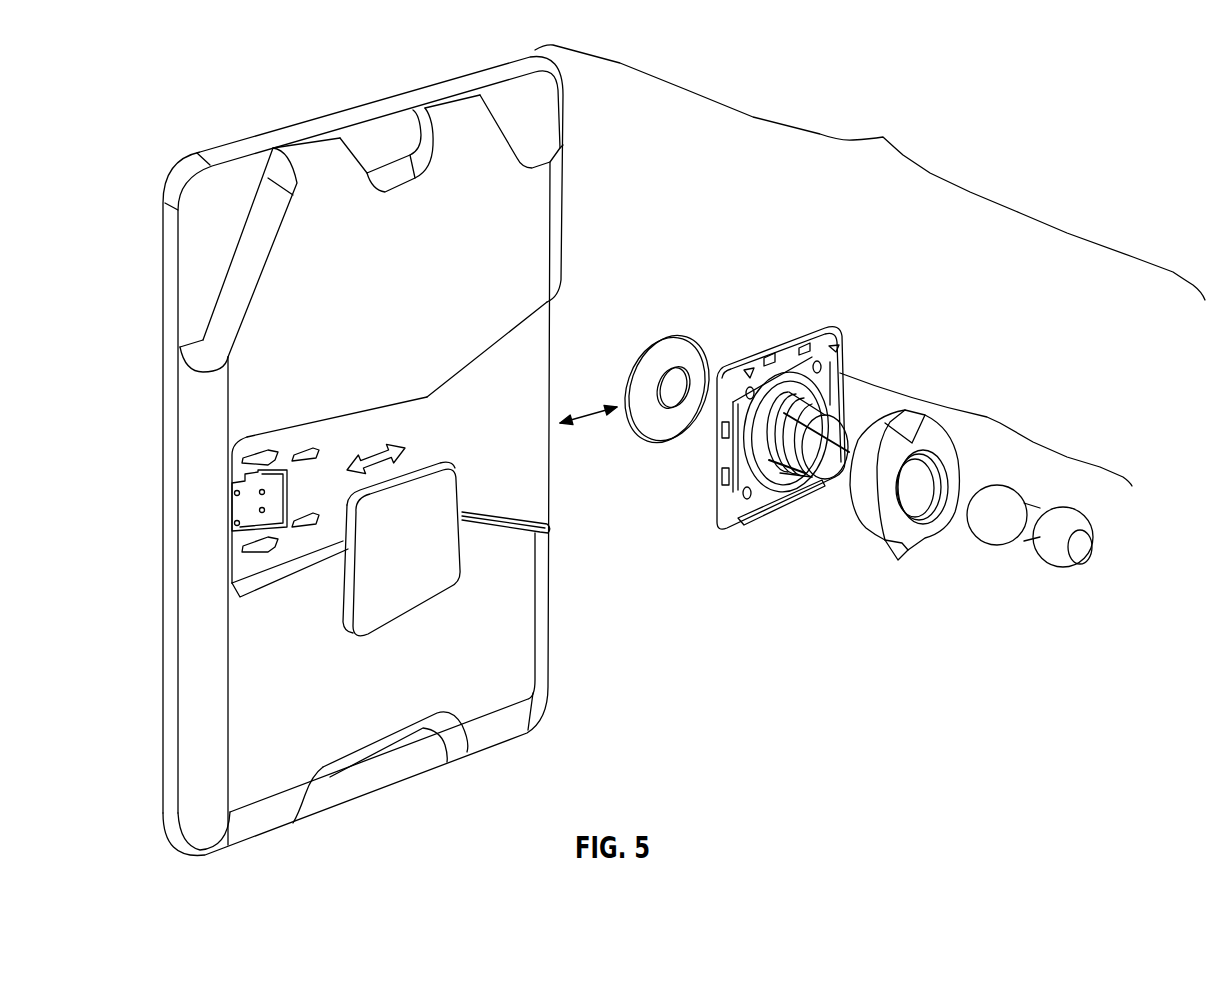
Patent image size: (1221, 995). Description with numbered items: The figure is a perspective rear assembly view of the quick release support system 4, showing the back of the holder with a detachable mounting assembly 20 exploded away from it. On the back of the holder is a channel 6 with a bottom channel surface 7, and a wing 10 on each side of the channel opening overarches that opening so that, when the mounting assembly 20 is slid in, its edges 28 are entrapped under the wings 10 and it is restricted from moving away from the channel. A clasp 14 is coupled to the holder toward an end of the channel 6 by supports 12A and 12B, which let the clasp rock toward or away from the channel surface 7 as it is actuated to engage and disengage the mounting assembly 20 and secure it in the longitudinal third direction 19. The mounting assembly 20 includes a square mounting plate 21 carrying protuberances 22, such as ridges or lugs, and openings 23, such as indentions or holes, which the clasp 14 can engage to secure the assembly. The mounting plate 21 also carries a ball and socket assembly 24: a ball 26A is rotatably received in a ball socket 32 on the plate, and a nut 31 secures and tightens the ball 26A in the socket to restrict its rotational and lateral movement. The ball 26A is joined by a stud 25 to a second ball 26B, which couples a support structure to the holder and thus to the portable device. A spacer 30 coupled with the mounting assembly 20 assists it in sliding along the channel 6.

The quick release support system 4 is at (572, 193).
The channel 6 is at (540, 347).
The channel surface 7 is at (373, 420).
The wing 10 is at (427, 399).
The support 12A is at (252, 453).
The support 12B is at (252, 537).
The clasp 14 is at (407, 527).
The longitudinal third direction 19 is at (587, 418).
The mounting assembly 20 is at (808, 610).
The mounting plate 21 is at (717, 503).
The protuberances 22 is at (755, 525).
The openings 23 is at (717, 477).
The ball and socket assembly 24 is at (987, 417).
The stud 25 is at (1027, 545).
The ball 26A is at (987, 483).
The second ball 26B is at (1070, 570).
The edges 28 is at (805, 337).
The spacer 30 is at (673, 335).
The nut 31 is at (907, 553).
The ball socket 32 is at (832, 480).